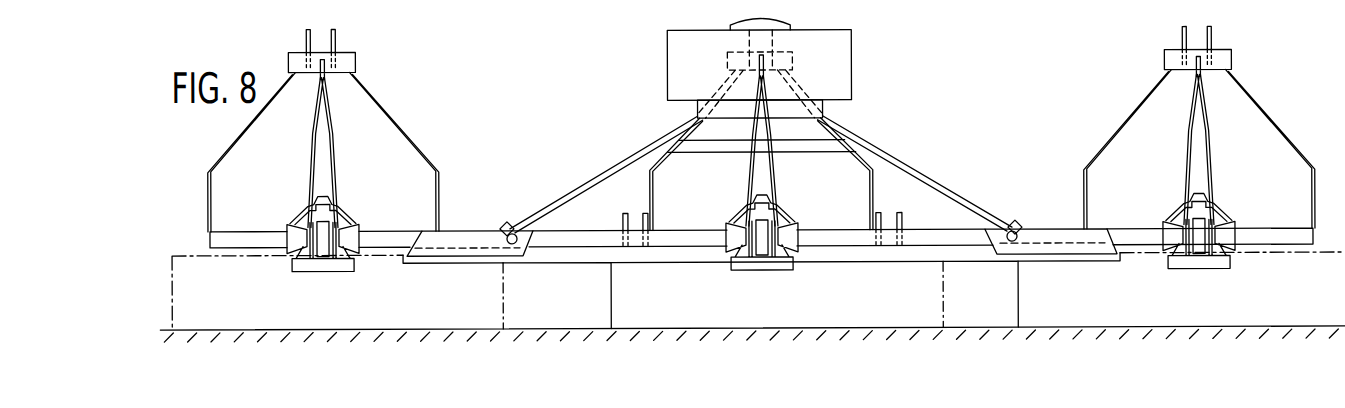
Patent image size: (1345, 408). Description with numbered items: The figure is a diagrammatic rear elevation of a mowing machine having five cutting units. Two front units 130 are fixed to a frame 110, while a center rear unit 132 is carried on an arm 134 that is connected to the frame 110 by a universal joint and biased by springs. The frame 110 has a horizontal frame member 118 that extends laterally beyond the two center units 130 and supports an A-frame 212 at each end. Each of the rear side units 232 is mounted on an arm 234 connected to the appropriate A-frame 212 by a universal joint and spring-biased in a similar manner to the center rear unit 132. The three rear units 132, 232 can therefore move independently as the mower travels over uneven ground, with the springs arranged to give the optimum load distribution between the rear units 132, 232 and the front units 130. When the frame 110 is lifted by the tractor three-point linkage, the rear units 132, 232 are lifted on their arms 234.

The frame 110 is at (835, 127).
The horizontal frame member 118 is at (460, 231).
The front units 130 is at (586, 321).
The center rear unit 132 is at (871, 310).
The arm 134 is at (763, 262).
The A-frame 212 is at (396, 133).
The rear side units 232 is at (480, 293).
The arm 234 is at (333, 217).